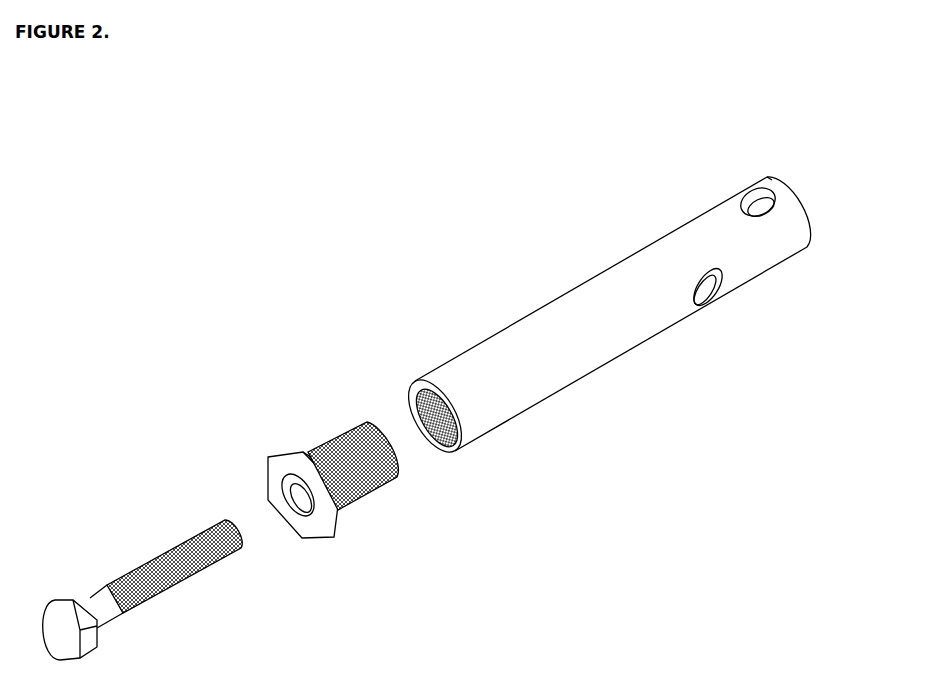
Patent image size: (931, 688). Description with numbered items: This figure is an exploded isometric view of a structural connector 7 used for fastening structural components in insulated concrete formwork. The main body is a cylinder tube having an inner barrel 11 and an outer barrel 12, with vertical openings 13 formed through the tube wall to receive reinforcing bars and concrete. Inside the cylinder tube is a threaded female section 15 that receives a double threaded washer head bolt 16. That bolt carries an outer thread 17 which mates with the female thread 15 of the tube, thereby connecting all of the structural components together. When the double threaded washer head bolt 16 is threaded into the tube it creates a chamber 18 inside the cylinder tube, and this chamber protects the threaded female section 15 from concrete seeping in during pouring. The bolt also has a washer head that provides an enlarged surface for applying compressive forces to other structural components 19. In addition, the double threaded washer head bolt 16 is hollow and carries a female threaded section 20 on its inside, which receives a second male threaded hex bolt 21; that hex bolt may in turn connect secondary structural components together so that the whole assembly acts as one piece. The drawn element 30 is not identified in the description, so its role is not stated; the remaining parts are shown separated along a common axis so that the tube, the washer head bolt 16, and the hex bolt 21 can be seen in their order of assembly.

The structural connector 7 is at (200, 258).
The inner barrel 11 is at (814, 210).
The outer barrel 12 is at (770, 174).
The vertical openings 13 is at (741, 199).
The threaded female section 15 is at (411, 414).
The double threaded washer head bolt 16 is at (278, 488).
The outer thread 17 is at (327, 440).
The chamber 18 is at (694, 282).
The other structural components 19 is at (316, 540).
The female threaded section 20 is at (267, 481).
The second male threaded hex bolt 21 is at (152, 556).
The tube 30 is at (615, 324).